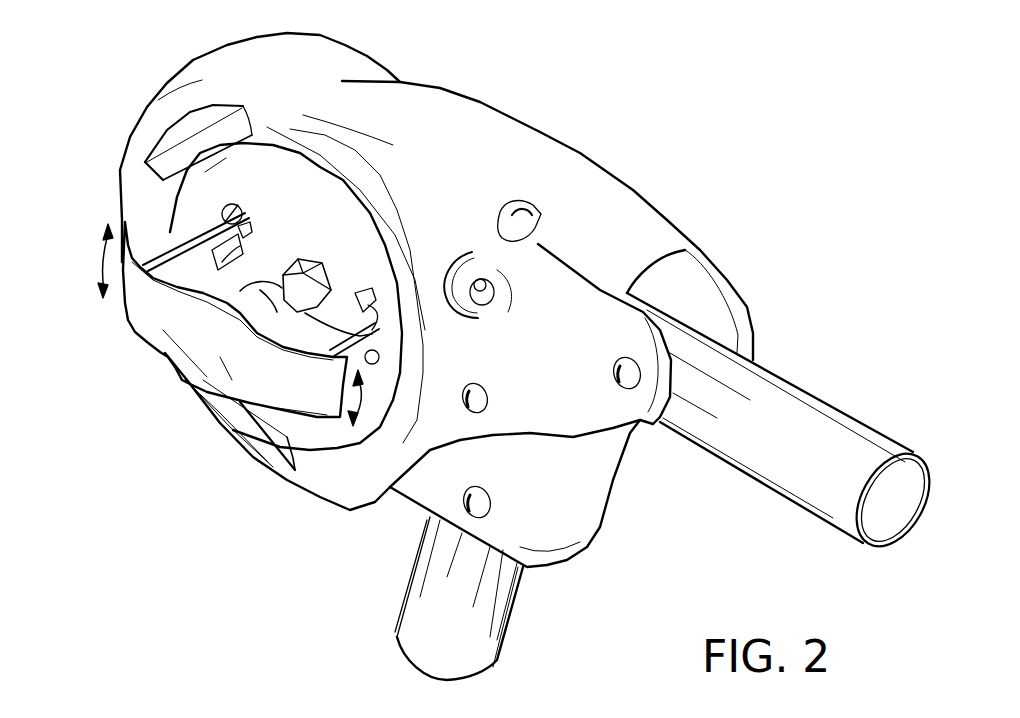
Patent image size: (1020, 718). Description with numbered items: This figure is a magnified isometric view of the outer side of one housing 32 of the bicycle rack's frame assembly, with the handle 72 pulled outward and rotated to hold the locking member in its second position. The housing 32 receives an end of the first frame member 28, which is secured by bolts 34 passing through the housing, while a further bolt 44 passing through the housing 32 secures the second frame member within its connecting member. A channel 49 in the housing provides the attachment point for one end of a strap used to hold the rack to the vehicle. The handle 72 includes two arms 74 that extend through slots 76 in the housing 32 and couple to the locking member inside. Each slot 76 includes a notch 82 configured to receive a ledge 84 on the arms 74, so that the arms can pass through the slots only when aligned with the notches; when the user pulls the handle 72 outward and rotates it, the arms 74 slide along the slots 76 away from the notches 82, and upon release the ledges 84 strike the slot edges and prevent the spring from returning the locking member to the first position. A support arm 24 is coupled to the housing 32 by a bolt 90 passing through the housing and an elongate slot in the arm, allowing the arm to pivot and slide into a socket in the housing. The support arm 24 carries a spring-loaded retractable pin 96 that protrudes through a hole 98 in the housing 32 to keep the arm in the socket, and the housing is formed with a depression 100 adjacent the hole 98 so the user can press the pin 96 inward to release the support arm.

The support arm 24 is at (820, 427).
The first frame member 28 is at (447, 625).
The housing 32 is at (480, 125).
The bolts 34 is at (481, 397).
The bolt 44 is at (307, 266).
The channel 49 is at (178, 133).
The handle 72 is at (205, 345).
The arms 74 is at (185, 240).
The slots 76 is at (232, 207).
The notch 82 is at (242, 257).
The ledge 84 is at (246, 230).
The bolt 90 is at (628, 385).
The pin 96 is at (482, 302).
The hole 98 is at (485, 298).
The depression 100 is at (460, 265).